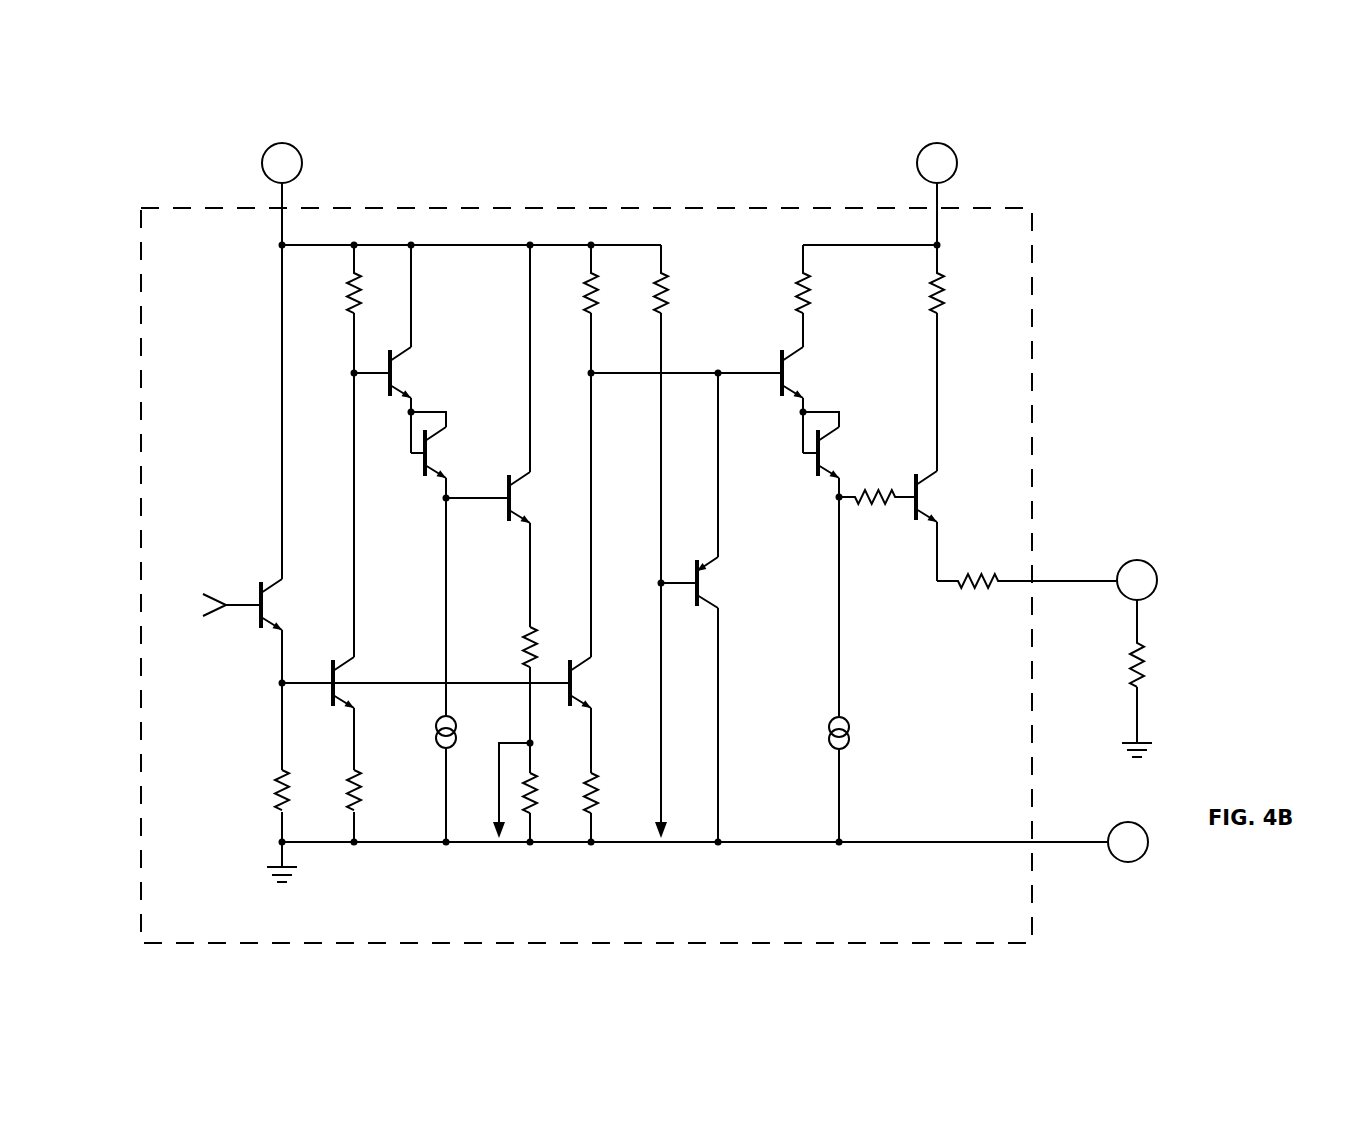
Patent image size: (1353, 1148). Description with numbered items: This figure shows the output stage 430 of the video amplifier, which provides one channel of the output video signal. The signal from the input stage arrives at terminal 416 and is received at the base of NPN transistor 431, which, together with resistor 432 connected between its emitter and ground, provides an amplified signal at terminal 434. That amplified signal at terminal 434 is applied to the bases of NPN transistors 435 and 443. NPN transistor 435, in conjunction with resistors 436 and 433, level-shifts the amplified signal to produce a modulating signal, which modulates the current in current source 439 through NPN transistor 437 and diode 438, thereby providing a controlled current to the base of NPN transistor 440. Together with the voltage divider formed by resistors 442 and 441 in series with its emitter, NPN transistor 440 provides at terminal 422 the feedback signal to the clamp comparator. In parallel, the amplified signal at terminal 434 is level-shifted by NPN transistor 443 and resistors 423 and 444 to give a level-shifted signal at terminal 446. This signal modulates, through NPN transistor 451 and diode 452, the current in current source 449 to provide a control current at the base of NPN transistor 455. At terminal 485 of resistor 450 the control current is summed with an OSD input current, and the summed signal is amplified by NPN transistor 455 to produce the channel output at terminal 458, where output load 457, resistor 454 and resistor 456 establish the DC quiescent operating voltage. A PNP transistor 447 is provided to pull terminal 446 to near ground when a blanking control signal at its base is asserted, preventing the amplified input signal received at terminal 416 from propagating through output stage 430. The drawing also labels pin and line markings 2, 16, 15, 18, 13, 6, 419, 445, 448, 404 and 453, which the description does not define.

The output stage 430 is at (641, 164).
The Vcc1 supply pin 2 is at (282, 181).
The Vcc2 supply pin 16 is at (937, 181).
The video output pin 15 is at (1137, 580).
The video input pin 18 is at (1130, 538).
The video input pin 13 is at (1168, 554).
The ground pin 6 is at (726, 855).
The NPN transistor 431 is at (268, 608).
The terminal 416 is at (238, 608).
The resistor 432 is at (273, 782).
The terminal 434 is at (297, 690).
The NPN transistor 435 is at (343, 690).
The resistor 433 is at (360, 805).
The resistor 436 is at (385, 295).
The line 419 is at (370, 375).
The NPN transistor 437 is at (398, 380).
The diode 438 is at (433, 460).
The current source 439 is at (458, 727).
The NPN transistor 440 is at (516, 505).
The resistor 442 is at (535, 642).
The terminal 422 is at (499, 752).
The resistor 441 is at (537, 775).
The NPN transistor 443 is at (578, 688).
The resistor 423 is at (595, 775).
The resistor 444 is at (589, 295).
The resistor RX 445 is at (668, 305).
The line XA 448 is at (659, 430).
The line 404 is at (660, 677).
The PNP transistor 447 is at (706, 590).
The terminal 446 is at (755, 376).
The resistor R20 453 is at (810, 303).
The NPN transistor 451 is at (790, 380).
The diode 452 is at (815, 465).
The terminal 485 is at (842, 698).
The current source 449 is at (851, 733).
The resistor 450 is at (862, 508).
The resistor 454 is at (944, 303).
The NPN transistor 455 is at (925, 500).
The resistor 456 is at (956, 592).
The terminal 458 is at (1055, 583).
The output load 457 is at (1142, 680).